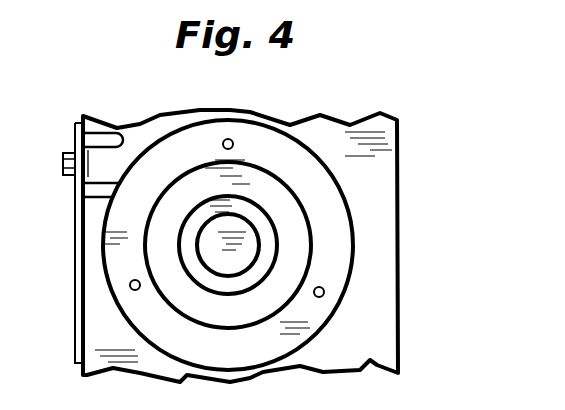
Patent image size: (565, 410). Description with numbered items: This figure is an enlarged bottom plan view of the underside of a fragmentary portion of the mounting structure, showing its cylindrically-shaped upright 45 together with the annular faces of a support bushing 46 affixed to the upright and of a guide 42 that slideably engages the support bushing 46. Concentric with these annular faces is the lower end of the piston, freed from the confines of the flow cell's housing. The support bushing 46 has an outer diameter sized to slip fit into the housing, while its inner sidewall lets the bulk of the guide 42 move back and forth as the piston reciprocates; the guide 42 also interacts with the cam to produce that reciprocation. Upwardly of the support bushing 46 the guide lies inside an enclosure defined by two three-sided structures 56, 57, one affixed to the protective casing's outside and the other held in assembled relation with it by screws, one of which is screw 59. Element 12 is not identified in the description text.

The shaft 12 is at (218, 262).
The guide 42 is at (267, 258).
The cylindrically-shaped upright 45 is at (252, 148).
The support bushing 46 is at (292, 238).
The three-sided structure 56 is at (377, 340).
The three-sided structure 57 is at (73, 338).
The screw 59 is at (62, 165).